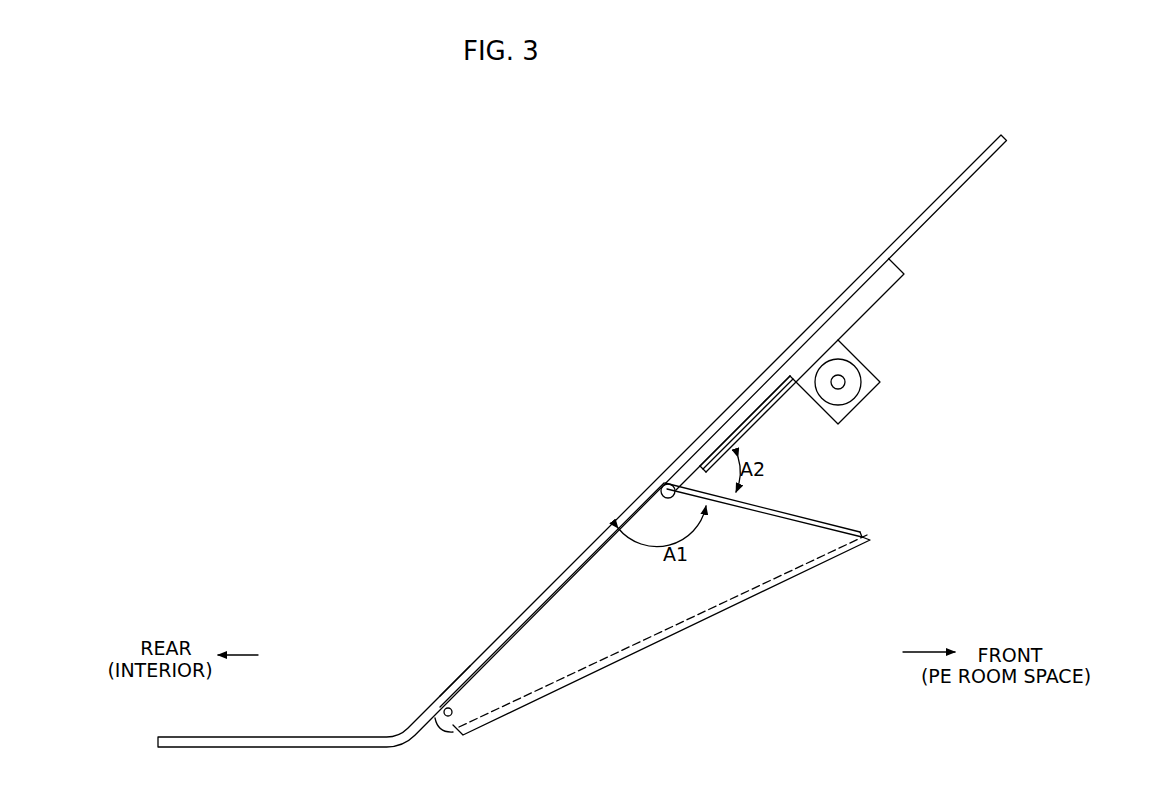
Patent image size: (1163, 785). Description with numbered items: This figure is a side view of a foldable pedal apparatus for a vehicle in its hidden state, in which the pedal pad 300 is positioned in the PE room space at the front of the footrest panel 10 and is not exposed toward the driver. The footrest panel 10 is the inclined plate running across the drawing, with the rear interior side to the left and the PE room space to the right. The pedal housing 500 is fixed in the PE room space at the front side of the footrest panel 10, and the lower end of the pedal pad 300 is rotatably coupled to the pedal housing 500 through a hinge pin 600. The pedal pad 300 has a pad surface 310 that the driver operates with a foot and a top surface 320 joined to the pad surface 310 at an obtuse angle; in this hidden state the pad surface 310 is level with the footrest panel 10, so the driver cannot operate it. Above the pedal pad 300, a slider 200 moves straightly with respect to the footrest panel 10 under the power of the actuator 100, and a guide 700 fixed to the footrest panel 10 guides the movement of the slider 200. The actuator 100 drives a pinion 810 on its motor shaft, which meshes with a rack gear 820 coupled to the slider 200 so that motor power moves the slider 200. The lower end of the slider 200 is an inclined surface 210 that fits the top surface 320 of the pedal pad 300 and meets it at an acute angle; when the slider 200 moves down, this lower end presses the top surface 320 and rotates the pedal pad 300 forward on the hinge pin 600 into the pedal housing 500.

The footrest panel 10 is at (928, 208).
The actuator 100 is at (880, 380).
The slider 200 is at (755, 403).
The inclined surface 210 is at (661, 485).
The pedal pad 300 is at (568, 607).
The pad surface 310 is at (460, 676).
The top surface 320 is at (850, 526).
The pedal housing 500 is at (633, 655).
The hinge pin 600 is at (440, 708).
The guide 700 is at (872, 287).
The pinion 810 is at (845, 394).
The rack gear 820 is at (757, 428).